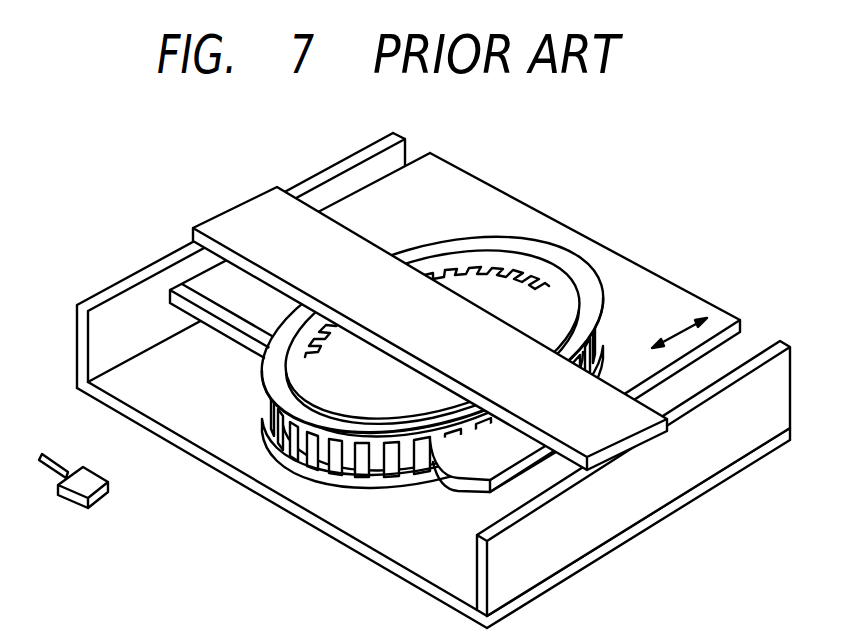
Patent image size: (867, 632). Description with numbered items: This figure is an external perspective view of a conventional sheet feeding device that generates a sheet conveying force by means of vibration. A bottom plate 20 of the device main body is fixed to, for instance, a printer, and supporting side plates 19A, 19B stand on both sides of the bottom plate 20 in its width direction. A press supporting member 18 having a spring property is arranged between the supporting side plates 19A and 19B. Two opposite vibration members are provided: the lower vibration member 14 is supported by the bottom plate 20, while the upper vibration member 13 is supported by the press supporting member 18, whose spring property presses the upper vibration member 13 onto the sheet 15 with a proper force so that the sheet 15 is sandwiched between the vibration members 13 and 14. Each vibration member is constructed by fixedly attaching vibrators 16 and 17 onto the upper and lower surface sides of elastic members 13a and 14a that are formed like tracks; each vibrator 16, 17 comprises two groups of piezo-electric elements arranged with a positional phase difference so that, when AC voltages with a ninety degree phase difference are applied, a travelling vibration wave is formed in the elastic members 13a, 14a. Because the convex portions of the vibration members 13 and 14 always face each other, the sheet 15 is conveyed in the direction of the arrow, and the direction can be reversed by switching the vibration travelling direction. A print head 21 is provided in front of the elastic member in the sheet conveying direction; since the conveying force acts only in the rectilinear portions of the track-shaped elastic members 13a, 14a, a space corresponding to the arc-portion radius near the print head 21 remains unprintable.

The upper vibration member 13 is at (558, 240).
The elastic member 13a is at (262, 396).
The lower vibration member 14 is at (335, 502).
The elastic member 14a is at (262, 434).
The sheet 15 is at (663, 292).
The vibrator 16 is at (462, 247).
The vibrator 17 is at (397, 497).
The press supporting member 18 is at (233, 222).
The supporting side plate 19A is at (723, 453).
The supporting side plate 19B is at (125, 287).
The bottom plate 20 is at (206, 460).
The print head 21 is at (72, 495).